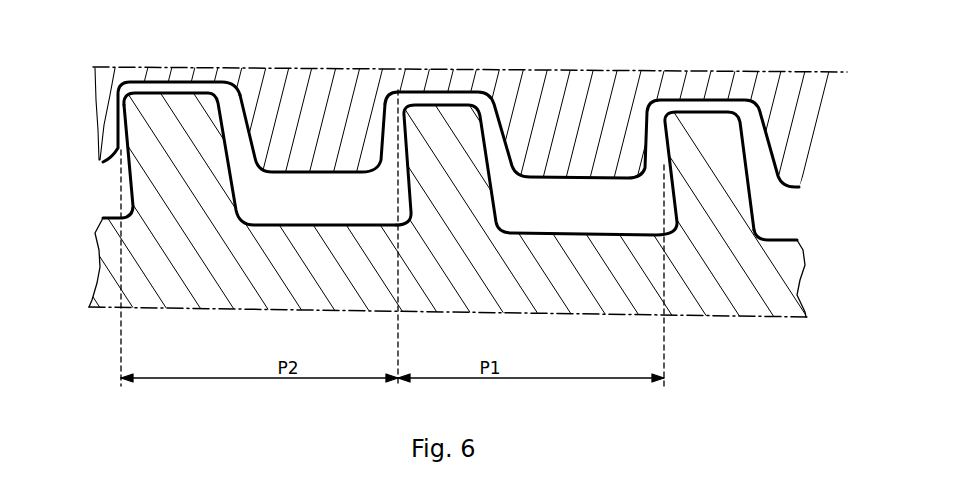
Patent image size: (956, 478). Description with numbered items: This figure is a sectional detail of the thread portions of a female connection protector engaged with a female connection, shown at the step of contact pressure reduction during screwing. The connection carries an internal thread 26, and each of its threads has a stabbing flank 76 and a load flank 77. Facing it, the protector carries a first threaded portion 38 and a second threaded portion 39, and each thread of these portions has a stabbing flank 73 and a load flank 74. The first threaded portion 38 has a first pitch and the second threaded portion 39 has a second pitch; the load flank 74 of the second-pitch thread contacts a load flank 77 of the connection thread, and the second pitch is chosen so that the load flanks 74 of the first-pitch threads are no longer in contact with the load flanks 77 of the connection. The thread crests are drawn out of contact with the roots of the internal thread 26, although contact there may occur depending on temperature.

The internal thread 26 is at (457, 80).
The first threaded portion 38 is at (460, 213).
The second threaded portion 39 is at (180, 193).
The stabbing flank 73 is at (752, 195).
The load flank 74 is at (135, 188).
The stabbing flank 76 is at (513, 128).
The load flank 77 is at (382, 138).